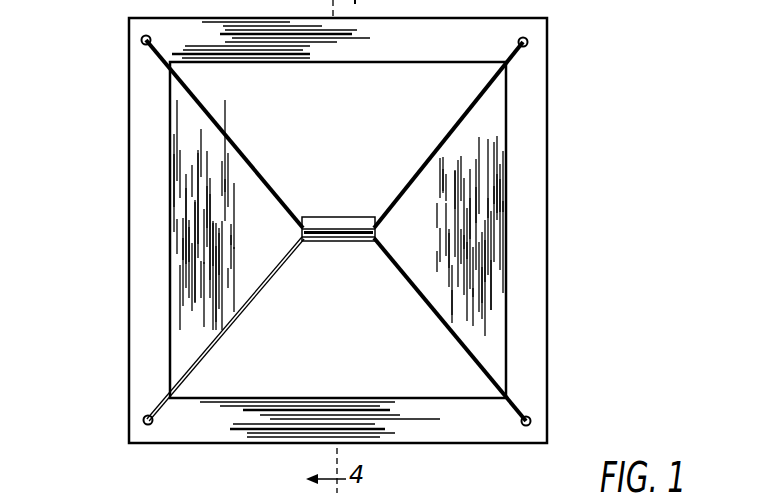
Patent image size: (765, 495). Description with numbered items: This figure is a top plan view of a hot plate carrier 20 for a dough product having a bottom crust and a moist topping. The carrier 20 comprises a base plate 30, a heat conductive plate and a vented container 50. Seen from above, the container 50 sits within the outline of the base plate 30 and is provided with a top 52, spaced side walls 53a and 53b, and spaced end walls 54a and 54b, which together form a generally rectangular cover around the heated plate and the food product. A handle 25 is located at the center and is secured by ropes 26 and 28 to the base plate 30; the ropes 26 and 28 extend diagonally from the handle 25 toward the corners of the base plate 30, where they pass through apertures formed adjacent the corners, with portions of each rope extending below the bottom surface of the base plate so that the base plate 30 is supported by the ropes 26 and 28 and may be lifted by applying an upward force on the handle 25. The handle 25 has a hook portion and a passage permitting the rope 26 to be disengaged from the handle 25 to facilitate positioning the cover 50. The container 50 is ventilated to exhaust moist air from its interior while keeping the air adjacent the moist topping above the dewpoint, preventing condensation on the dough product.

The carrier 20 is at (552, 63).
The handle 25 is at (318, 226).
The rope 26 is at (240, 154).
The rope 28 is at (272, 265).
The base plate 30 is at (148, 342).
The vented container 50 is at (302, 376).
The top 52 is at (449, 133).
The side wall 53a is at (447, 62).
The side wall 53b is at (420, 402).
The end wall 54a is at (505, 243).
The end wall 54b is at (170, 194).